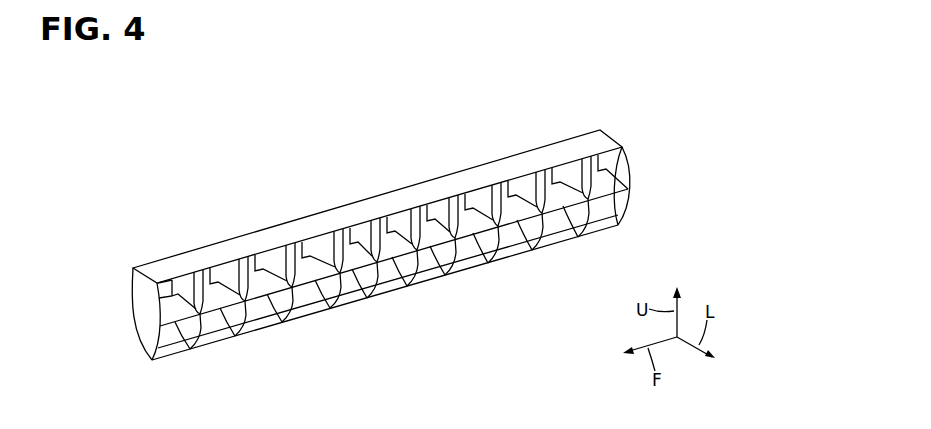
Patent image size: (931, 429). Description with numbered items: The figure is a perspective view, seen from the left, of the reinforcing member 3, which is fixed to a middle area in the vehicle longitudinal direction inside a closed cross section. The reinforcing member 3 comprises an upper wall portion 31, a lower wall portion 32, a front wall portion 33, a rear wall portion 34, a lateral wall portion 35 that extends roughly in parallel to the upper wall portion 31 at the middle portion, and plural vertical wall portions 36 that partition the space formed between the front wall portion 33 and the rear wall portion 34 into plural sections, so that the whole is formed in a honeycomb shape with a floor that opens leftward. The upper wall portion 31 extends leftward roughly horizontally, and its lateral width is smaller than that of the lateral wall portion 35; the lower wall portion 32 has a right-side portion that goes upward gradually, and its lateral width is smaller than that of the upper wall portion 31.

The reinforcing member 3 is at (369, 175).
The upper wall portion 31 is at (507, 162).
The lower wall portion 32 is at (508, 258).
The front wall portion 33 is at (142, 318).
The rear wall portion 34 is at (627, 168).
The lateral wall portion 35 is at (306, 278).
The vertical wall portions 36 is at (412, 284).